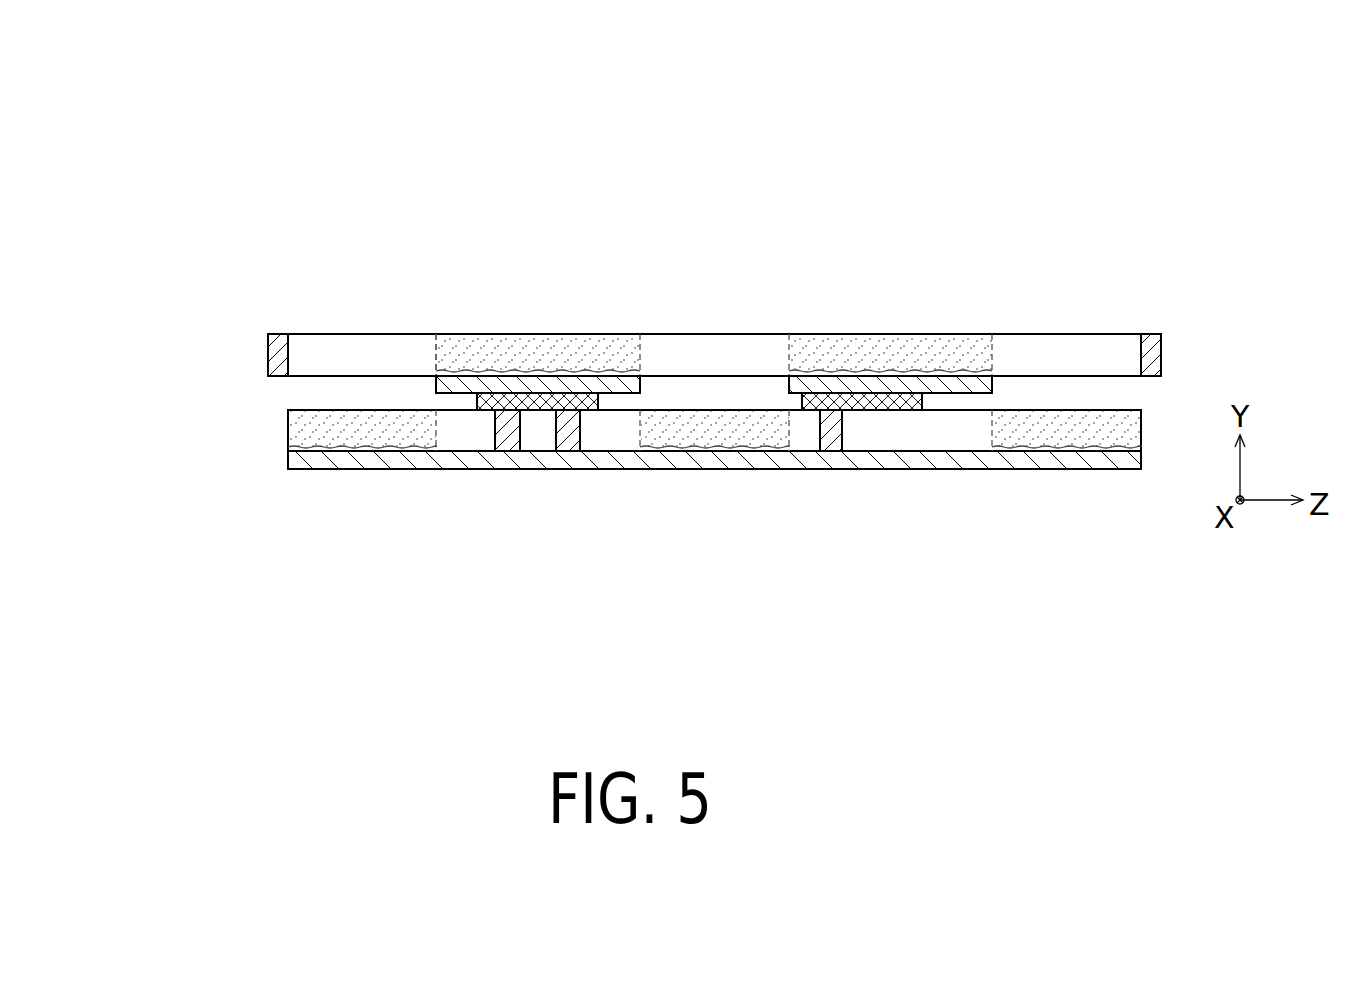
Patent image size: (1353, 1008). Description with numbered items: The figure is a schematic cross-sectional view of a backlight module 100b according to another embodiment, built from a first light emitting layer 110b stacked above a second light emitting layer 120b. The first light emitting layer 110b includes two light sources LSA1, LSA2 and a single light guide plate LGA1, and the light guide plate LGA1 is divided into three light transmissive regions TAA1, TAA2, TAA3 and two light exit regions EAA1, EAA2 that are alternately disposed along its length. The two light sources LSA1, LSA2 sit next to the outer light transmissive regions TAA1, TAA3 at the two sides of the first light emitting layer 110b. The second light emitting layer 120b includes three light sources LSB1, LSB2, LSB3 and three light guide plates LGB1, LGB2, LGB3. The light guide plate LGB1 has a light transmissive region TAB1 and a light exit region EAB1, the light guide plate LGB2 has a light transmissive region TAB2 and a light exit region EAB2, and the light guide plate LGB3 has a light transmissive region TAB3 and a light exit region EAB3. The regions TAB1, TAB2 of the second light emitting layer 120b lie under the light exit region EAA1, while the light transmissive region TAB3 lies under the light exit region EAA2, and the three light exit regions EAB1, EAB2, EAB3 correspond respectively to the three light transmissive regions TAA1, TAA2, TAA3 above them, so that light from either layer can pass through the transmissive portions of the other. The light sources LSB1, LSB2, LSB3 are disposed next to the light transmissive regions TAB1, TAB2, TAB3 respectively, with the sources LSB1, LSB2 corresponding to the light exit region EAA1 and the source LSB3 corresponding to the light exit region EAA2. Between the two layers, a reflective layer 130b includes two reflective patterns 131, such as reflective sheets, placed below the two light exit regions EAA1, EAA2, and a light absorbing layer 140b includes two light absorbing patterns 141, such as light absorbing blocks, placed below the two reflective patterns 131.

The backlight module 100b is at (152, 158).
The first light emitting layer 110b is at (215, 355).
The second light emitting layer 120b is at (215, 442).
The light source LSA1 is at (282, 334).
The light source LSA2 is at (1148, 334).
The light guide plate LGA1 is at (1075, 232).
The light transmissive region TAA1 is at (405, 356).
The light transmissive region TAA2 is at (705, 356).
The light transmissive region TAA3 is at (1052, 356).
The light exit region EAA1 is at (500, 354).
The light exit region EAA2 is at (892, 354).
The light transmissive region TAB1 is at (459, 445).
The light transmissive region TAB2 is at (609, 444).
The light transmissive region TAB3 is at (972, 445).
The light exit region EAB1 is at (372, 437).
The light exit region EAB2 is at (700, 434).
The light exit region EAB3 is at (1050, 437).
The light guide plate LGB1 is at (488, 565).
The light guide plate LGB2 is at (738, 565).
The light guide plate LGB3 is at (1090, 567).
The light source LSB1 is at (508, 446).
The light source LSB2 is at (568, 446).
The light source LSB3 is at (832, 446).
The reflective pattern 131 is at (955, 394).
The reflective layer 130b is at (726, 523).
The light absorbing pattern 141 is at (877, 410).
The light absorbing layer 140b is at (699, 503).